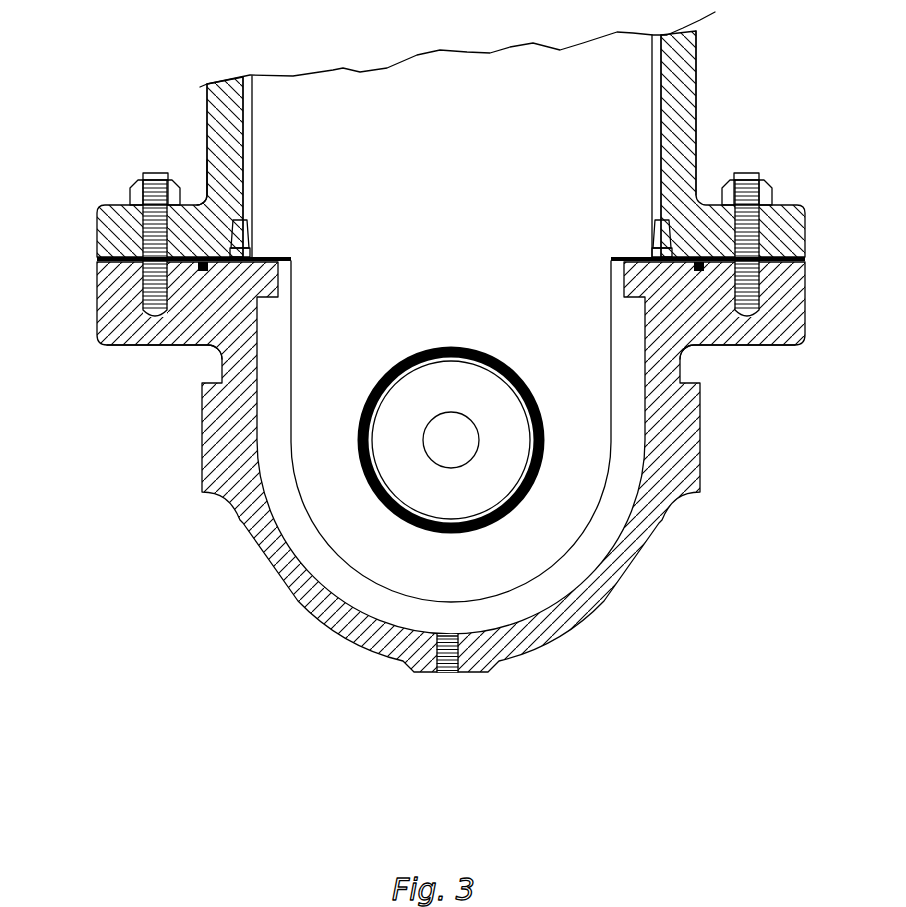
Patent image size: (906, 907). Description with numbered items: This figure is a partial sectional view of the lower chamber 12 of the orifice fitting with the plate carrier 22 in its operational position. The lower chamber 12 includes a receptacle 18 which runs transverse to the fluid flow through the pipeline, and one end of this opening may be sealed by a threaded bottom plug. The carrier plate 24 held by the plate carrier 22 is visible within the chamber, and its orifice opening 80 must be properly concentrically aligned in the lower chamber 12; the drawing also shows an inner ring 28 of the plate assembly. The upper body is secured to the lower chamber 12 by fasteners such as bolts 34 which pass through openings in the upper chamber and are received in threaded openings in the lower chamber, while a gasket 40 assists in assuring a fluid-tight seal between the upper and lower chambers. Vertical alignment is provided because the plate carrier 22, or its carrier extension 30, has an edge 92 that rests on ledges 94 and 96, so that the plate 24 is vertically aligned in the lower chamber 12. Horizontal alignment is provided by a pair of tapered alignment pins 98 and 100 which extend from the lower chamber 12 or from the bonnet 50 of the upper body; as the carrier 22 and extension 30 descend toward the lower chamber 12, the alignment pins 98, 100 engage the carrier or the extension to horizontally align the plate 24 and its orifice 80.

The lower chamber 12 is at (300, 607).
The receptacle 18 is at (447, 633).
The plate carrier 22 is at (570, 382).
The carrier plate 24 is at (512, 512).
The inner ring 28 is at (477, 513).
The carrier extension 30 is at (458, 181).
The bolts 34 is at (143, 247).
The gasket 40 is at (200, 349).
The bonnet 50 is at (700, 78).
The orifice opening 80 is at (475, 455).
The edge 92 is at (273, 256).
The ledge 94 is at (203, 270).
The ledge 96 is at (627, 265).
The tapered alignment pin 98 is at (206, 192).
The tapered alignment pin 100 is at (667, 233).